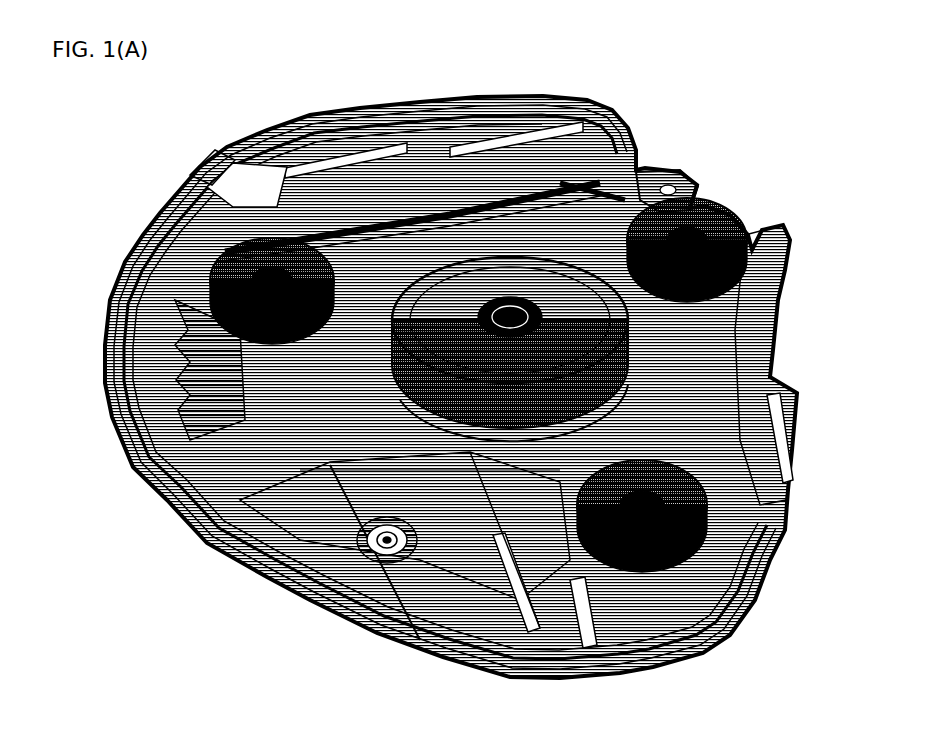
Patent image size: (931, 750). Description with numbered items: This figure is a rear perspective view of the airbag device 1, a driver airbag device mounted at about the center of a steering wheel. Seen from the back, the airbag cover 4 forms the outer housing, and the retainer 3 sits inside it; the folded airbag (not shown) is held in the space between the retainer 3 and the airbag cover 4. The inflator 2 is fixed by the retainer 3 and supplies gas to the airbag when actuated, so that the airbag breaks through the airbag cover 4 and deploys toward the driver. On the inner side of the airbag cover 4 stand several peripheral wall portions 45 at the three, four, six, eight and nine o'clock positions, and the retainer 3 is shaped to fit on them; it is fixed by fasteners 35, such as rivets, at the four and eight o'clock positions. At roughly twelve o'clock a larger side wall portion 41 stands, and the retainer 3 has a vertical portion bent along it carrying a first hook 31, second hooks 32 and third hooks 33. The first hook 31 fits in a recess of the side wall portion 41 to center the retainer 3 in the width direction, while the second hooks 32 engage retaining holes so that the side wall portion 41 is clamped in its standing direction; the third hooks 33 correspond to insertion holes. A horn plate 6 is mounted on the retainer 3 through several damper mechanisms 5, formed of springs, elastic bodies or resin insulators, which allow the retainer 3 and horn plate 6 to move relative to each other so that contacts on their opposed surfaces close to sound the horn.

The airbag device 1 is at (753, 93).
The inflator 2 is at (630, 133).
The retainer 3 is at (205, 392).
The airbag cover 4 is at (360, 107).
The damper mechanism 5 is at (710, 213).
The horn plate 6 is at (773, 367).
The first hook 31 is at (417, 100).
The second hook 32 is at (203, 163).
The third hook 33 is at (497, 100).
The fastener 35 is at (378, 556).
The side wall portion 41 is at (293, 130).
The peripheral wall portion 45 is at (265, 475).